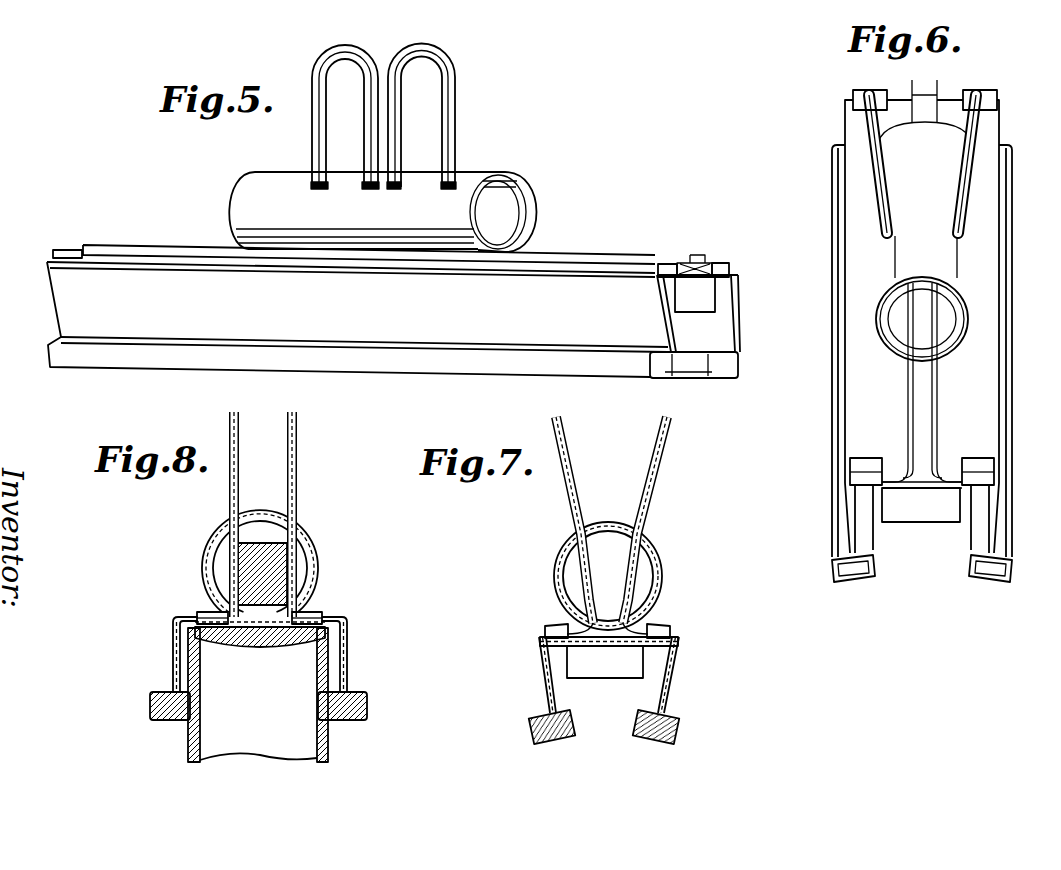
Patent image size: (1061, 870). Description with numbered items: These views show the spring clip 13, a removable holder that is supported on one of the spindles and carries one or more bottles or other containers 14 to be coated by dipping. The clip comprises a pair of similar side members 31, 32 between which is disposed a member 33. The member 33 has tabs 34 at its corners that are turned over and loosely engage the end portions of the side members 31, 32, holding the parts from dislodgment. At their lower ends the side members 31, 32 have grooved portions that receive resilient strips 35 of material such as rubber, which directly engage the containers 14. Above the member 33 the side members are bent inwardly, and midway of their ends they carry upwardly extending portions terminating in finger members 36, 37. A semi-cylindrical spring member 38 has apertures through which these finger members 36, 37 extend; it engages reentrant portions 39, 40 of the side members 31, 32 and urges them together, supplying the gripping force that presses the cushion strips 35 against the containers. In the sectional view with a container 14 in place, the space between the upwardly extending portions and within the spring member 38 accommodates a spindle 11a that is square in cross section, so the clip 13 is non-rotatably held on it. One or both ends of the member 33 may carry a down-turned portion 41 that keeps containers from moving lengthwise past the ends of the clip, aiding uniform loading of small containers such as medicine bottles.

In FIG. 5, the spring clip 13 is at (548, 237).
In FIG. 6, the spring clip 13 is at (828, 404).
In FIG. 8, the spring clip 13 is at (321, 566).
In FIG. 7, the spring clip 13 is at (666, 599).
In FIG. 8, the container 14 is at (330, 762).
In FIG. 8, the spindle 11a is at (245, 558).
In FIG. 5, the side member 31 is at (630, 338).
In FIG. 6, the side member 31 is at (850, 512).
In FIG. 8, the side member 31 is at (175, 640).
In FIG. 7, the side member 31 is at (545, 678).
In FIG. 5, the side member 32 is at (733, 322).
In FIG. 6, the side member 32 is at (993, 522).
In FIG. 8, the side member 32 is at (349, 646).
In FIG. 7, the side member 32 is at (670, 676).
In FIG. 5, the member 33 is at (704, 262).
In FIG. 6, the member 33 is at (925, 400).
In FIG. 8, the member 33 is at (266, 640).
In FIG. 7, the member 33 is at (578, 643).
In FIG. 5, the tab 34 is at (56, 252).
In FIG. 6, the tab 34 is at (860, 88).
In FIG. 8, the tab 34 is at (196, 612).
In FIG. 7, the tab 34 is at (551, 627).
In FIG. 5, the resilient strip 35 is at (722, 373).
In FIG. 6, the resilient strip 35 is at (985, 558).
In FIG. 8, the resilient strip 35 is at (150, 705).
In FIG. 7, the resilient strip 35 is at (655, 737).
In FIG. 5, the finger member 36 is at (318, 62).
In FIG. 6, the finger member 36 is at (863, 123).
In FIG. 8, the finger member 36 is at (229, 425).
In FIG. 7, the finger member 36 is at (558, 436).
In FIG. 5, the finger member 37 is at (404, 47).
In FIG. 6, the finger member 37 is at (962, 123).
In FIG. 8, the finger member 37 is at (297, 425).
In FIG. 7, the finger member 37 is at (671, 445).
In FIG. 5, the semi-cylindrical spring member 38 is at (452, 182).
In FIG. 6, the semi-cylindrical spring member 38 is at (878, 228).
In FIG. 8, the semi-cylindrical spring member 38 is at (306, 546).
In FIG. 7, the semi-cylindrical spring member 38 is at (661, 575).
In FIG. 7, the reentrant portion 39 is at (583, 597).
In FIG. 7, the reentrant portion 40 is at (620, 605).
In FIG. 5, the down-turned portion 41 is at (695, 294).
In FIG. 6, the down-turned portion 41 is at (898, 508).
In FIG. 7, the down-turned portion 41 is at (632, 672).